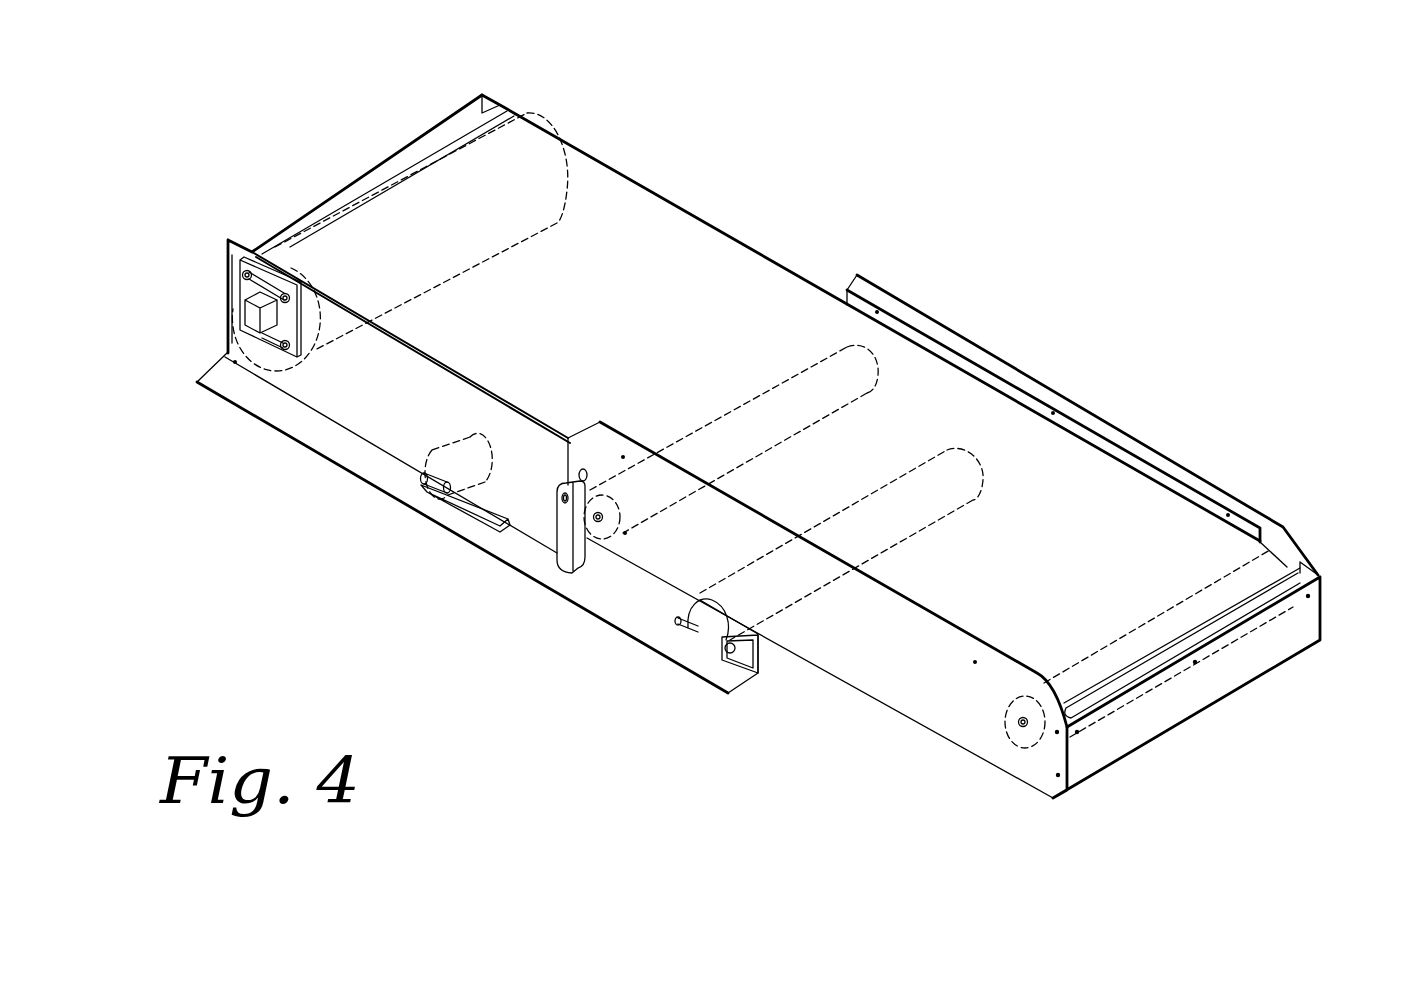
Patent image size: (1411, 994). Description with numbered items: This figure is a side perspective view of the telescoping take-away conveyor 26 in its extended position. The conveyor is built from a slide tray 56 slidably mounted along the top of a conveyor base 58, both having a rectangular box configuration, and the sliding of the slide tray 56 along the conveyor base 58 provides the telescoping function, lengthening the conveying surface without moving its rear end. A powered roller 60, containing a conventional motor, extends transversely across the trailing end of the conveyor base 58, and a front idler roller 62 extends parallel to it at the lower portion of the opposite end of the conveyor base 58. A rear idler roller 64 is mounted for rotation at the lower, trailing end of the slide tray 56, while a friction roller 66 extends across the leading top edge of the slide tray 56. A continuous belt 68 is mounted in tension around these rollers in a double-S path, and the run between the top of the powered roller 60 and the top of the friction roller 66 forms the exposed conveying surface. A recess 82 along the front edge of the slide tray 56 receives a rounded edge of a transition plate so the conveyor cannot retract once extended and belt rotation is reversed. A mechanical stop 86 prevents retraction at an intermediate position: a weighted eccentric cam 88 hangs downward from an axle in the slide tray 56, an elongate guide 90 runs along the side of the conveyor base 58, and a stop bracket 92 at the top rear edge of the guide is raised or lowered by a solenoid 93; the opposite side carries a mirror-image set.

The telescoping take-away conveyor 26 is at (1168, 374).
The slide tray 56 is at (834, 657).
The conveyor base 58 is at (225, 357).
The powered roller 60 is at (400, 213).
The front idler roller 62 is at (925, 498).
The rear idler roller 64 is at (807, 393).
The friction roller 66 is at (1277, 570).
The continuous belt 68 is at (623, 270).
The recess 82 is at (1247, 608).
The mechanical stop 86 is at (470, 613).
The eccentric cam 88 is at (565, 567).
The elongate guide 90 is at (420, 485).
The stop bracket 92 is at (424, 487).
The solenoid 93 is at (477, 467).